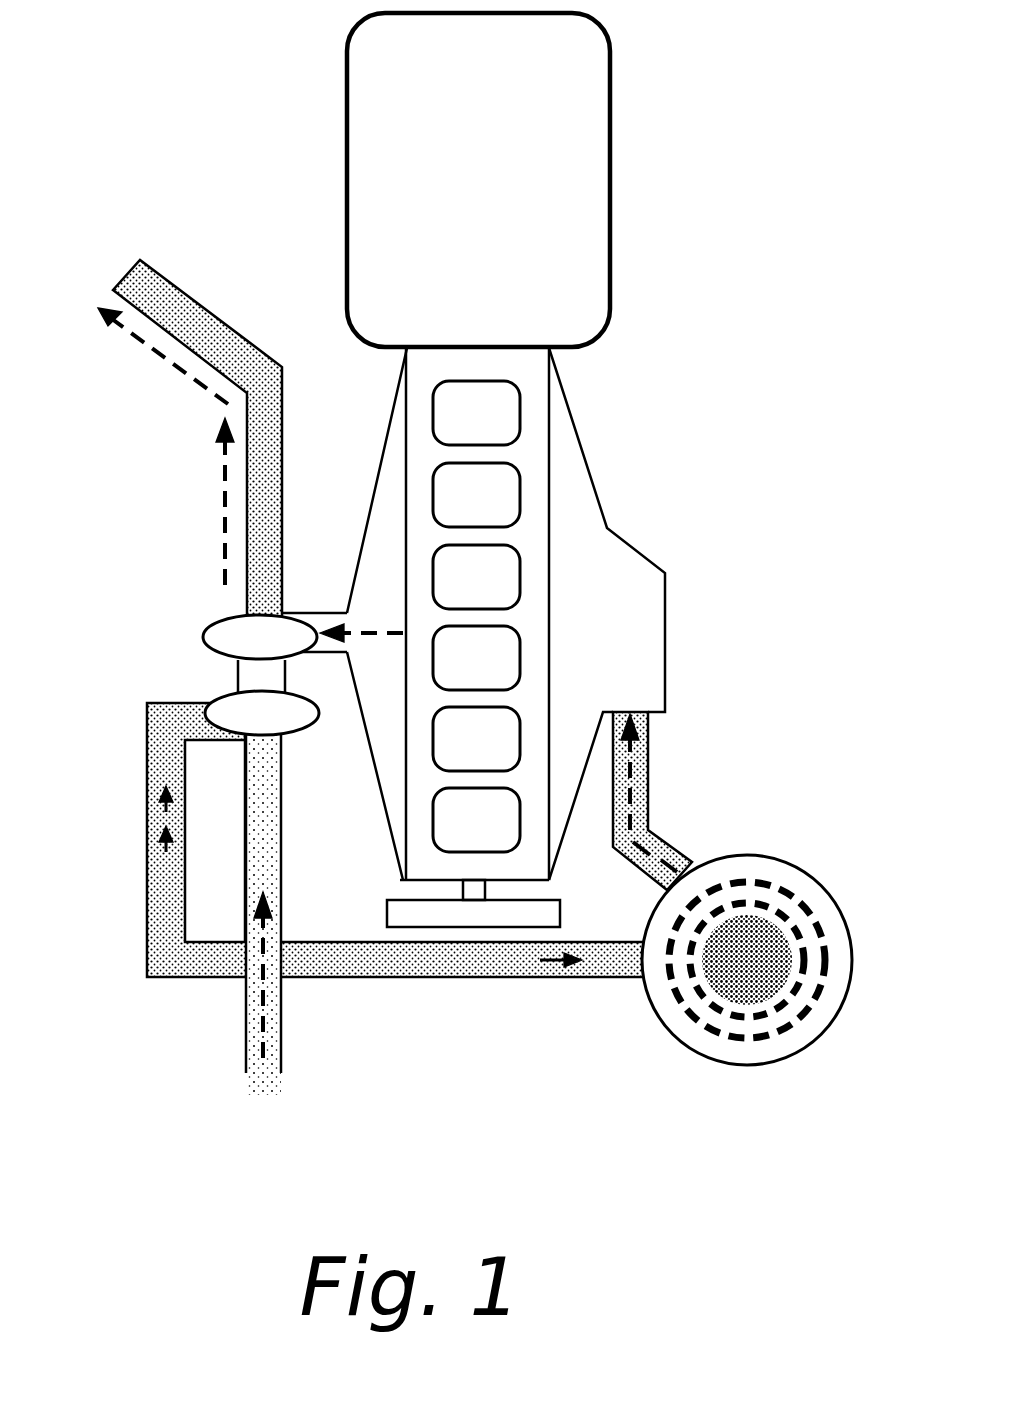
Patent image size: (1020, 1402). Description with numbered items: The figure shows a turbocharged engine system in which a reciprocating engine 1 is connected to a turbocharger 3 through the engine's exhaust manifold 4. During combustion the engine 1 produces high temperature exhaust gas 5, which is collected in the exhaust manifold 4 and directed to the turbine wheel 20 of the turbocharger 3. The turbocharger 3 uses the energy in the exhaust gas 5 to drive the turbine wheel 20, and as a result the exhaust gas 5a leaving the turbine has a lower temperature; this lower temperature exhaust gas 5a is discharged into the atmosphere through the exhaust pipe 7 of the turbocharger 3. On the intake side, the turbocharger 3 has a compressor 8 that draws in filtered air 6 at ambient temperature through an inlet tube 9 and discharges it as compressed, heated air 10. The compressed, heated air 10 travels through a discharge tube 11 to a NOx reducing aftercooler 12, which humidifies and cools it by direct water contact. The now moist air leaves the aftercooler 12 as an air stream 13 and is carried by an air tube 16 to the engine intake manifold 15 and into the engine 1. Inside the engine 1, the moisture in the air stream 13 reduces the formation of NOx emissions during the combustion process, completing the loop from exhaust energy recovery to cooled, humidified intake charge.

The reciprocating engine 1 is at (500, 381).
The turbocharger 3 is at (212, 708).
The exhaust manifold 4 is at (382, 452).
The exhaust gas 5 is at (360, 628).
The lower temperature exhaust gas 5a is at (158, 386).
The filtered air 6 is at (258, 1003).
The exhaust pipe 7 is at (178, 287).
The compressor 8 is at (305, 726).
The inlet tube 9 is at (246, 1034).
The compressed, heated air 10 is at (145, 766).
The discharge tube 11 is at (147, 862).
The NOx reducing aftercooler 12 is at (670, 1033).
The air stream 13 is at (655, 786).
The engine intake manifold 15 is at (650, 556).
The air tube 16 is at (684, 862).
The turbine wheel 20 is at (210, 630).